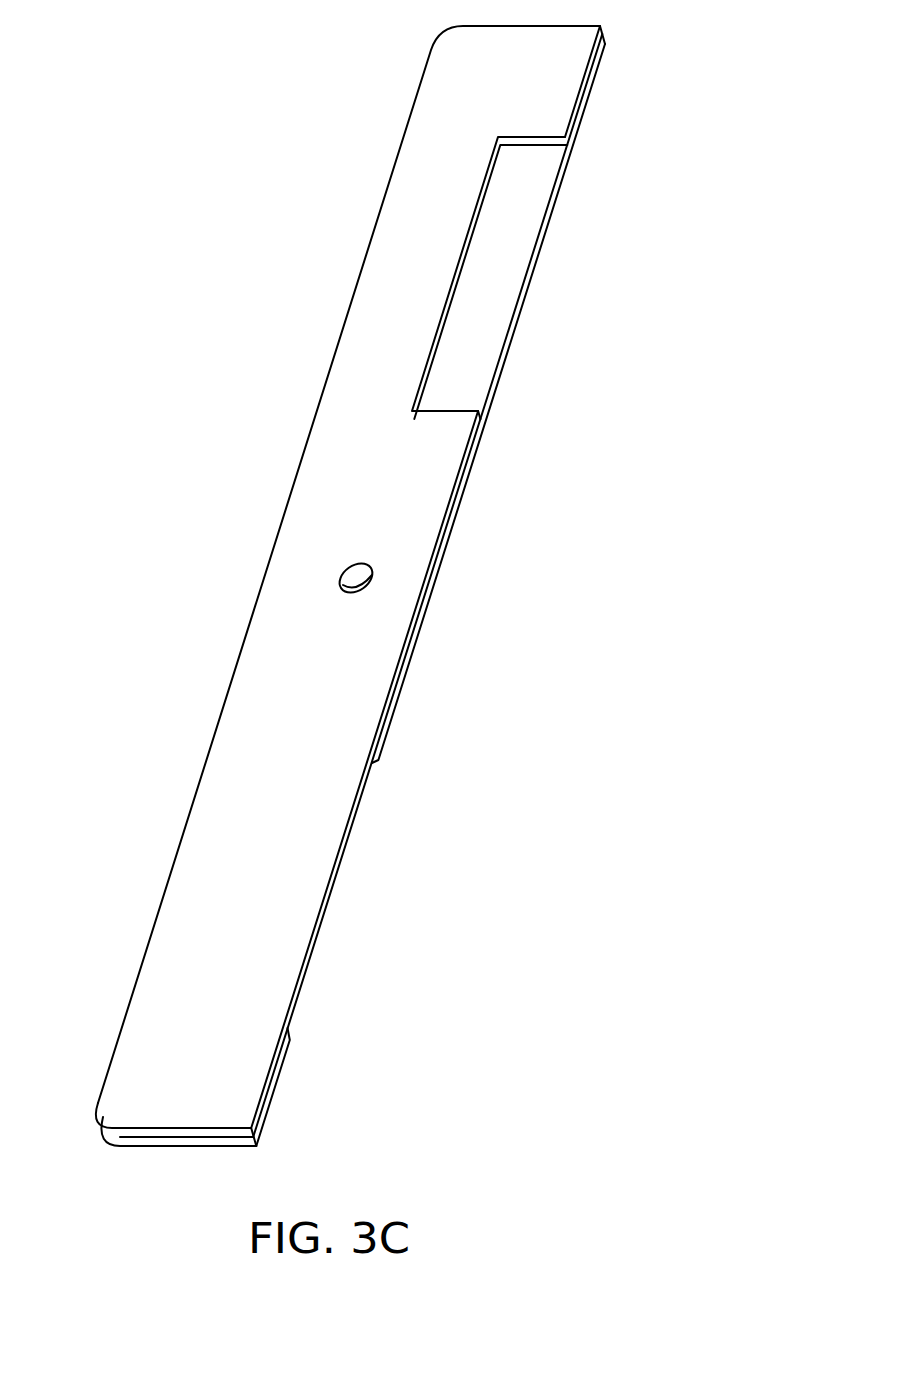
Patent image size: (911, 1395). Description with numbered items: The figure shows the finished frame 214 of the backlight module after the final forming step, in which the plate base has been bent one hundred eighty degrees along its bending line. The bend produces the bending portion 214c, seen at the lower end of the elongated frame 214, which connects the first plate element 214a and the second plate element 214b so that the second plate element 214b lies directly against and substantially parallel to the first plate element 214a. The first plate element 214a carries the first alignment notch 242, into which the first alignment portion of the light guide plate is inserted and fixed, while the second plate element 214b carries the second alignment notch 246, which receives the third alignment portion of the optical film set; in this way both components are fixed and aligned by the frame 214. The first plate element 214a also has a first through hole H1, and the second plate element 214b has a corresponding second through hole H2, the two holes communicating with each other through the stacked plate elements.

The frame 214 is at (373, 1120).
The first plate element 214a is at (478, 333).
The second plate element 214b is at (382, 305).
The bending portion 214c is at (112, 1135).
The first alignment notch 242 is at (332, 923).
The second alignment notch 246 is at (498, 250).
The first through hole H1 is at (363, 585).
The second through hole H2 is at (353, 570).